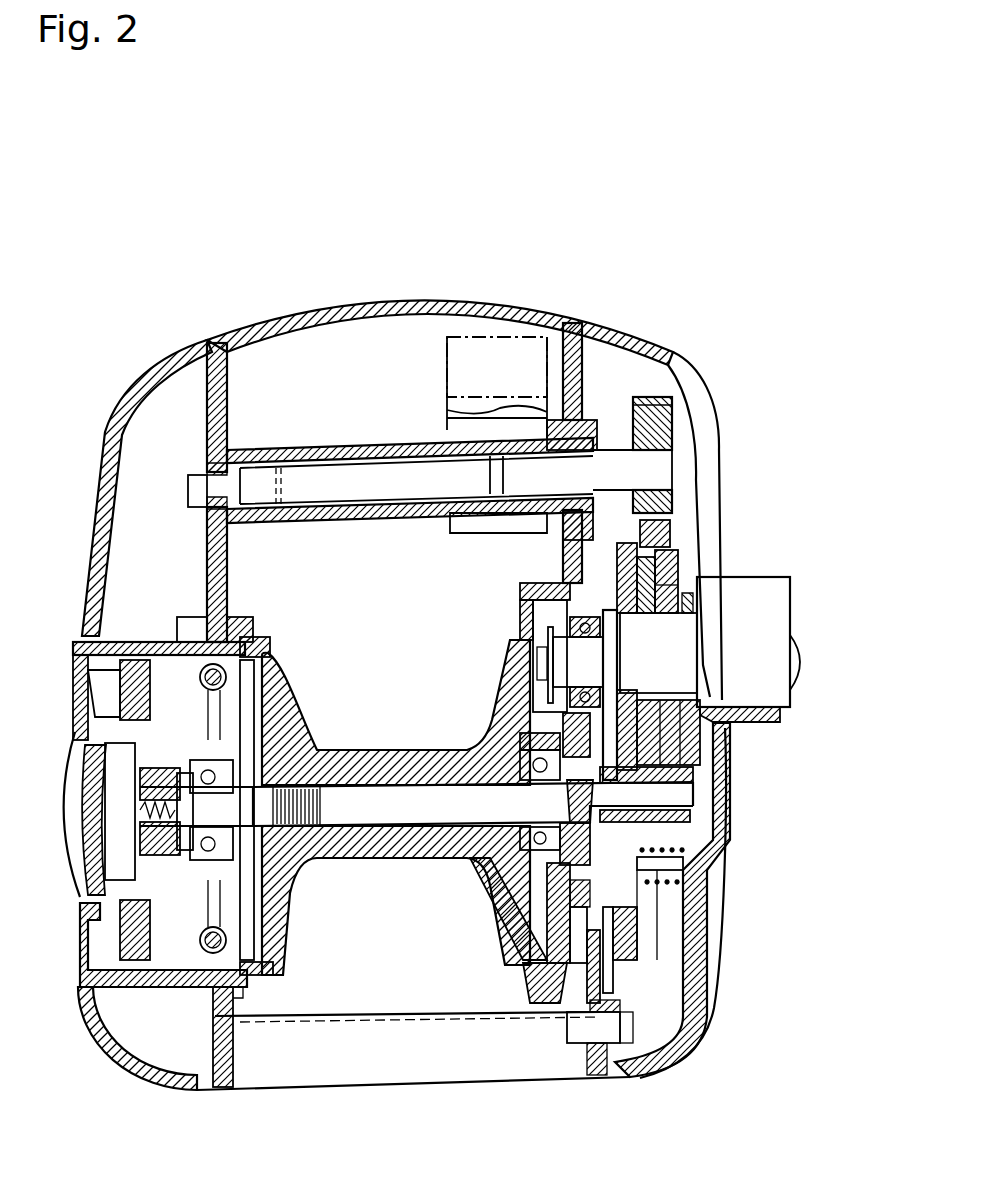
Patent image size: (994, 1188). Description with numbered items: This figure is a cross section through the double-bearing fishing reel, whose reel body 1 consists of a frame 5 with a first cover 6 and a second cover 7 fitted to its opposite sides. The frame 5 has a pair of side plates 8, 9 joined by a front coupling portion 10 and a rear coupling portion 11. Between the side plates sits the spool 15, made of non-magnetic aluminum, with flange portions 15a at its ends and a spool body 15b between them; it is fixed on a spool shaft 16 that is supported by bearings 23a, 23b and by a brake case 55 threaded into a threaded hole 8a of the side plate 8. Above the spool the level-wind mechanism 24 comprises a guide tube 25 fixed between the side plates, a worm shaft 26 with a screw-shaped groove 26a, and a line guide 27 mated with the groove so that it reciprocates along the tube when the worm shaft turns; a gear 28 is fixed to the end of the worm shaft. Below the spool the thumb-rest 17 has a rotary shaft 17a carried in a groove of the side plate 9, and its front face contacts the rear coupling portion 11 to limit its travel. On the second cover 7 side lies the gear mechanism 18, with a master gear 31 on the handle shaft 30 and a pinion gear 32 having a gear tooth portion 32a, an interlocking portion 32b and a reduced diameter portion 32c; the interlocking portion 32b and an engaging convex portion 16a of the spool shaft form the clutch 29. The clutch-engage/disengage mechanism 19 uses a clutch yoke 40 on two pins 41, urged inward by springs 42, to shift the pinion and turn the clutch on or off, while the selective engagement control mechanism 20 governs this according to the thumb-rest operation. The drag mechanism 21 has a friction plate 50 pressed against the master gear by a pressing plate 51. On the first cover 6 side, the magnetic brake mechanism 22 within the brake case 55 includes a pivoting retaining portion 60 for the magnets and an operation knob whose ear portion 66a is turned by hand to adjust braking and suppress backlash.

The reel body 1 is at (218, 322).
The frame 5 is at (352, 312).
The first cover 6 is at (130, 392).
The second cover 7 is at (648, 355).
The side plate 8 is at (222, 402).
The threaded hole 8a is at (238, 626).
The side plate 9 is at (578, 372).
The front coupling portion 10 is at (433, 315).
The rear coupling portion 11 is at (245, 1020).
The spool 15 is at (335, 782).
The flange portion 15a is at (290, 660).
The spool body 15b is at (380, 878).
The spool shaft 16 is at (338, 797).
The engaging convex portion 16a is at (557, 800).
The thumb-rest 17 is at (450, 1072).
The rotary shaft 17a is at (228, 1090).
The gear mechanism 18 is at (688, 540).
The clutch-engage/disengage mechanism 19 is at (700, 850).
The selective engagement control mechanism 20 is at (650, 985).
The drag mechanism 21 is at (707, 562).
The magnetic brake mechanism 22 is at (75, 750).
The bearing 23a is at (265, 735).
The bearing 23b is at (530, 762).
The level-wind mechanism 24 is at (418, 533).
The guide tube 25 is at (355, 440).
The worm shaft 26 is at (335, 482).
The screw-shaped groove 26a is at (290, 506).
The line guide 27 is at (452, 425).
The gear 28 is at (660, 428).
The clutch 29 is at (478, 872).
The handle shaft 30 is at (796, 637).
The master gear 31 is at (703, 497).
The pinion gear 32 is at (682, 824).
The gear tooth portion 32a is at (682, 770).
The interlocking portion 32b is at (522, 912).
The reduced diameter portion 32c is at (517, 740).
The clutch yoke 40 is at (664, 798).
The pin 41 is at (660, 897).
The spring 42 is at (700, 895).
The friction plate 50 is at (697, 527).
The pressing plate 51 is at (702, 582).
The brake case 55 is at (148, 640).
The retaining portion 60 is at (80, 858).
The ear portion 66a is at (118, 700).